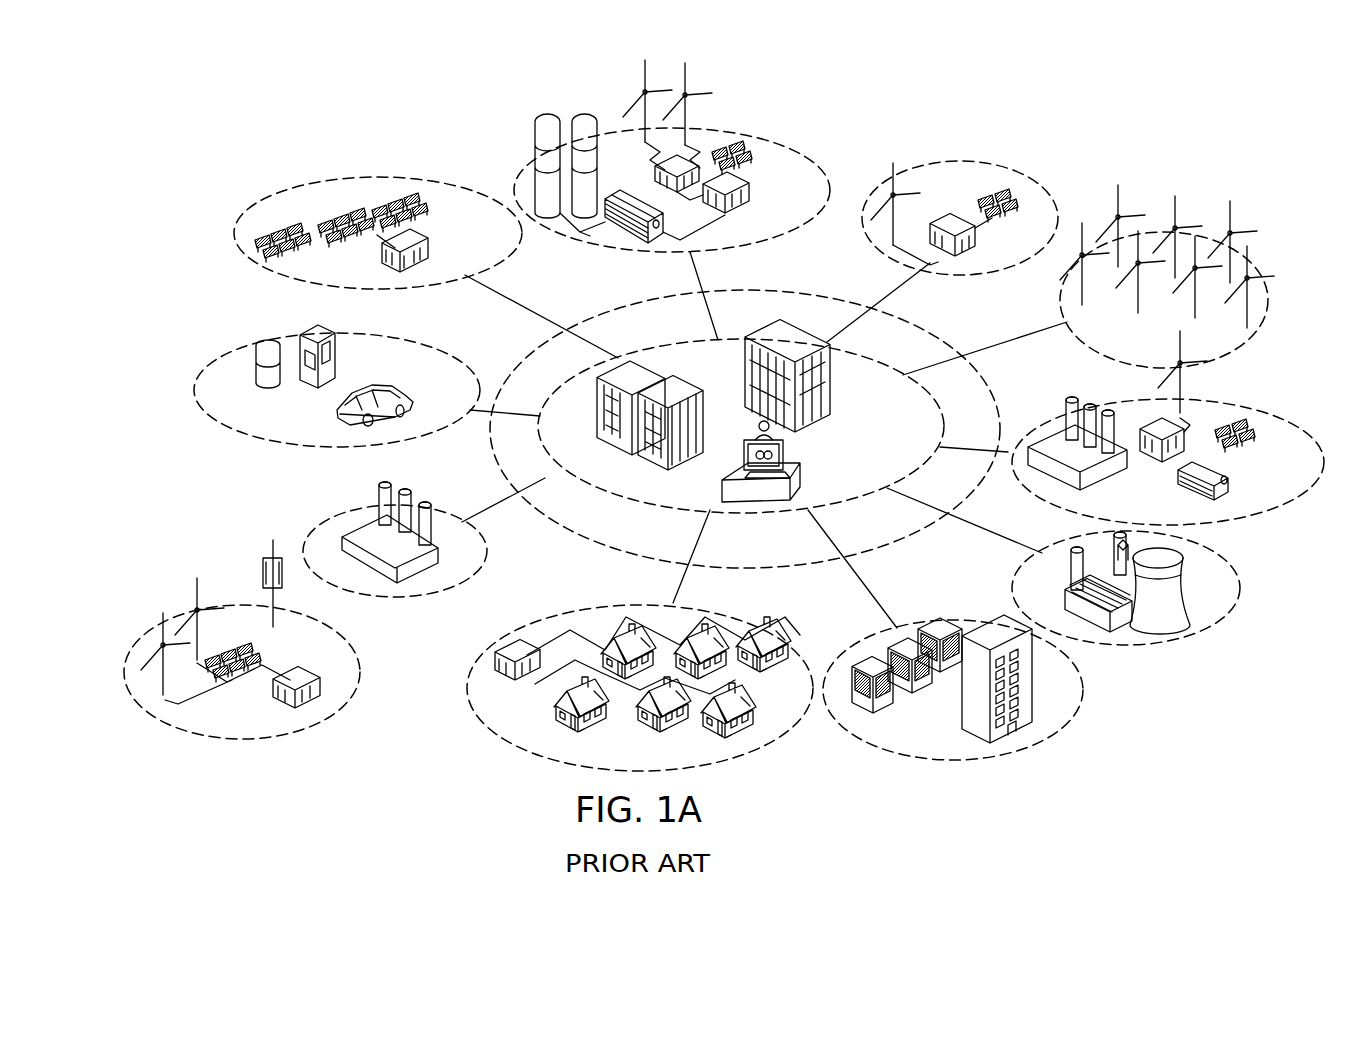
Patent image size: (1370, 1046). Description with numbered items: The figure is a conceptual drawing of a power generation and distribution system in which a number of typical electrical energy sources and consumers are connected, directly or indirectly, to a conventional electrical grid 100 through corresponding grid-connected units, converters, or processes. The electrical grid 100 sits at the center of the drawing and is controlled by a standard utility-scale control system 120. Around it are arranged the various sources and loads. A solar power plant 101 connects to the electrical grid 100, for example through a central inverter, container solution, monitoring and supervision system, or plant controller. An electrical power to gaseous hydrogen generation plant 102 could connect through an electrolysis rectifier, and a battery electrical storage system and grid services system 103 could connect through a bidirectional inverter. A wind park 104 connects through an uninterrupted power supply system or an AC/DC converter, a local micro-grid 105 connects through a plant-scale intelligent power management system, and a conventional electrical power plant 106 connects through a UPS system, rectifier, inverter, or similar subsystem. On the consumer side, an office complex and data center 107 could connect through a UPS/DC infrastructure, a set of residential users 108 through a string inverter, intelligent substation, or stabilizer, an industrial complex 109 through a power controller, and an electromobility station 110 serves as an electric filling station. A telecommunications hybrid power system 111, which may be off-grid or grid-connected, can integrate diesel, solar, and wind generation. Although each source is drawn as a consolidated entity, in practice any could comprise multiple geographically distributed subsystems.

The electrical grid 100 is at (618, 305).
The solar power plant 101 is at (281, 189).
The electrical power to gaseous hydrogen generation plant 102 is at (792, 150).
The battery electrical storage system (BESS)/grid services system 103 is at (1007, 165).
The wind park 104 is at (1274, 309).
The local micro-grid 105 is at (1270, 512).
The conventional electrical power plant 106 is at (1166, 641).
The office complex and data center 107 is at (1016, 754).
The residential users 108 is at (548, 763).
The industrial complex 109 is at (415, 601).
The electromobility station 110 is at (226, 350).
The telecommunications hybrid power system 111 is at (197, 740).
The utility-scale control system 120 is at (894, 439).